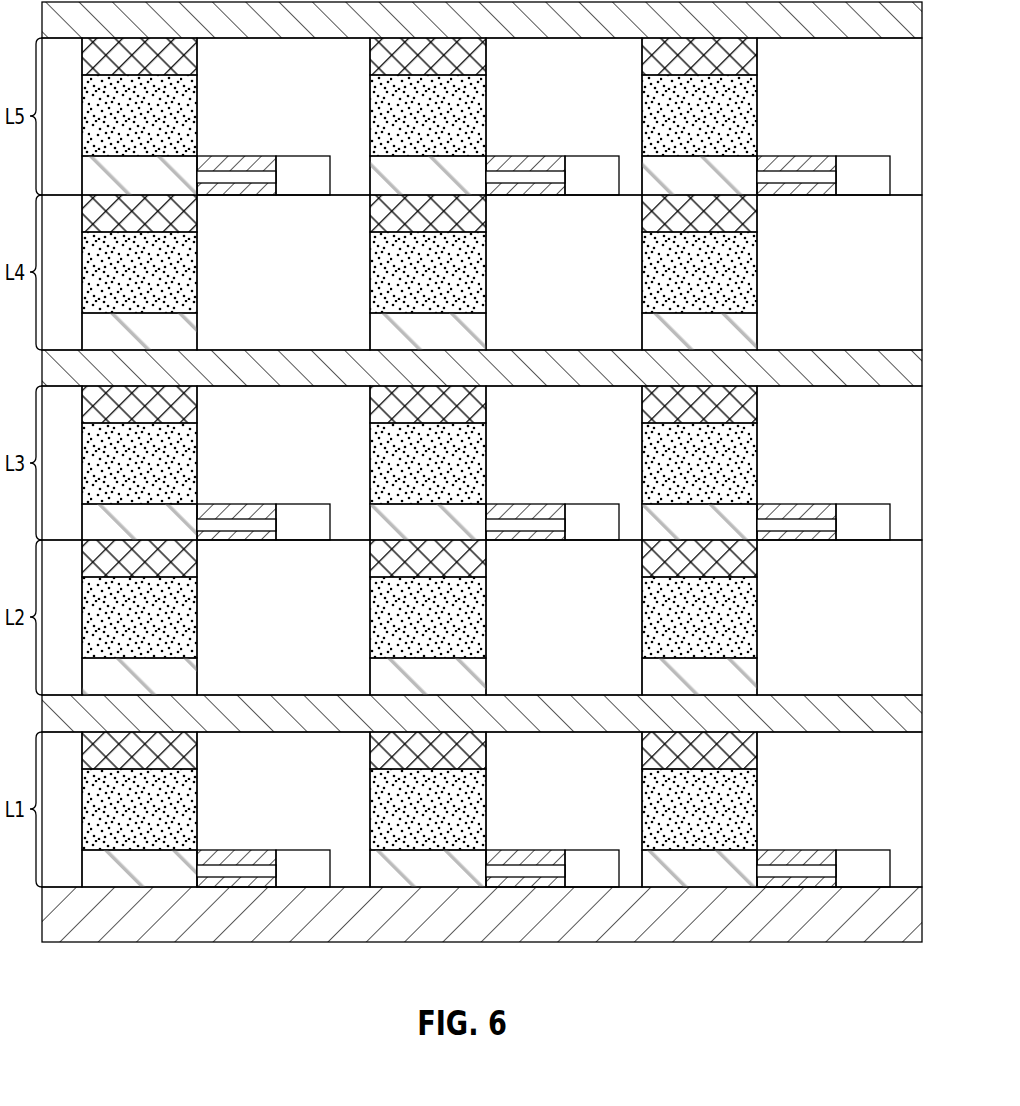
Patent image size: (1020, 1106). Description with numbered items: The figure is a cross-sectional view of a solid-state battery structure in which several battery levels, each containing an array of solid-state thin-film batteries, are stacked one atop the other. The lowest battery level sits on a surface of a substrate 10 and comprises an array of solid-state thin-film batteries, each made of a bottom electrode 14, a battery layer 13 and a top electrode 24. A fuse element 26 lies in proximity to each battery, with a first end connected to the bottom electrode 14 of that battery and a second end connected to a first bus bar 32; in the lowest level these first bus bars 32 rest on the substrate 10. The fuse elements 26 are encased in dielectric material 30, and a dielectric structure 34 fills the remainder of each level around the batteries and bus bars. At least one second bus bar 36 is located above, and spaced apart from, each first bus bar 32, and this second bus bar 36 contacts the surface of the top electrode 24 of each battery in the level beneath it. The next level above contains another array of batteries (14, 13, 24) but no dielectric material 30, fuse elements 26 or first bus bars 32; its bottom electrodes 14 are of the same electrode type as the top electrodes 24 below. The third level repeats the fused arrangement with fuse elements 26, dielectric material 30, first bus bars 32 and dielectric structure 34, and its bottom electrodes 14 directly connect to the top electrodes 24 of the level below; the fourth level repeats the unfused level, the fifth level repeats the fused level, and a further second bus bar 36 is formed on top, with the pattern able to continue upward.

The substrate 10 is at (482, 914).
The solid-state thin-film battery layer 13 is at (419, 462).
The bottom electrode 14 is at (419, 521).
The top electrode 24 is at (419, 403).
The fuse element 26 is at (232, 177).
The dielectric material 30 is at (212, 167).
The first bus bar 32 is at (583, 521).
The dielectric structure 34 is at (482, 462).
The second bus bar 36 is at (482, 367).